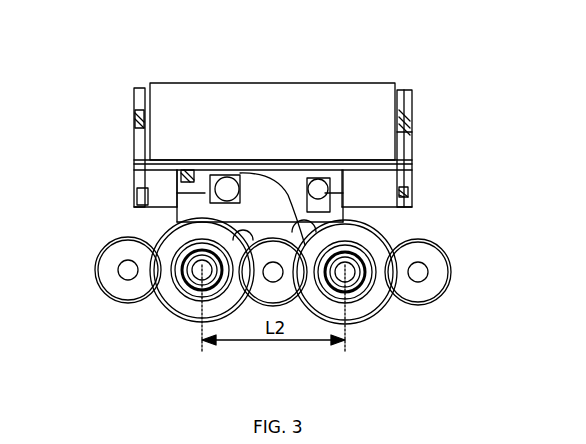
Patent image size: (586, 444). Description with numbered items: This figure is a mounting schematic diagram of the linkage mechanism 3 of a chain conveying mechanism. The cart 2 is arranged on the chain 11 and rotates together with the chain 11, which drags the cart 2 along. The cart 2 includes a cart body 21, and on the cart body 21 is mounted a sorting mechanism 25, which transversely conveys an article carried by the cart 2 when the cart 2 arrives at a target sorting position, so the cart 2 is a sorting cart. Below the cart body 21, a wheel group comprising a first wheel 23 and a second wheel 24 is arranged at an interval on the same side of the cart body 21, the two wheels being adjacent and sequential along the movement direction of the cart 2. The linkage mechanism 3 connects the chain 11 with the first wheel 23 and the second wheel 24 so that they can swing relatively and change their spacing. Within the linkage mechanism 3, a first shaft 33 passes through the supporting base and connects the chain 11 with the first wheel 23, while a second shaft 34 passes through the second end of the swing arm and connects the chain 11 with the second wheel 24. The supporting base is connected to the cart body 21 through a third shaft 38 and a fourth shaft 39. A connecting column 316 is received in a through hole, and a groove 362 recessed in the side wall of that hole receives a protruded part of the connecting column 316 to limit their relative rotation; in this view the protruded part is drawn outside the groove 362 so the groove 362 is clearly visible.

The cart 2 is at (373, 112).
The sorting mechanism 25 is at (278, 100).
The connecting column 316 is at (152, 142).
The third shaft 38 is at (227, 189).
The fourth shaft 39 is at (320, 189).
The groove 362 is at (185, 179).
The cart body 21 is at (387, 190).
The linkage mechanism 3 is at (355, 207).
The chain 11 is at (130, 252).
The second shaft 34 is at (352, 271).
The first shaft 33 is at (196, 270).
The first wheel 23 is at (172, 303).
The second wheel 24 is at (388, 306).